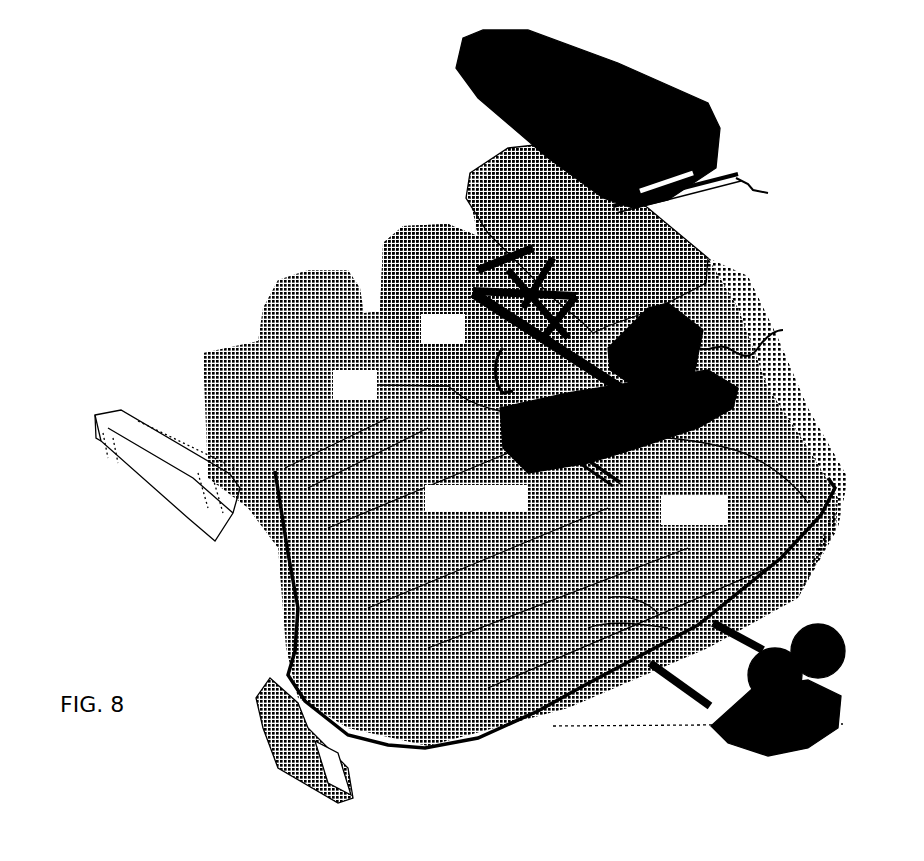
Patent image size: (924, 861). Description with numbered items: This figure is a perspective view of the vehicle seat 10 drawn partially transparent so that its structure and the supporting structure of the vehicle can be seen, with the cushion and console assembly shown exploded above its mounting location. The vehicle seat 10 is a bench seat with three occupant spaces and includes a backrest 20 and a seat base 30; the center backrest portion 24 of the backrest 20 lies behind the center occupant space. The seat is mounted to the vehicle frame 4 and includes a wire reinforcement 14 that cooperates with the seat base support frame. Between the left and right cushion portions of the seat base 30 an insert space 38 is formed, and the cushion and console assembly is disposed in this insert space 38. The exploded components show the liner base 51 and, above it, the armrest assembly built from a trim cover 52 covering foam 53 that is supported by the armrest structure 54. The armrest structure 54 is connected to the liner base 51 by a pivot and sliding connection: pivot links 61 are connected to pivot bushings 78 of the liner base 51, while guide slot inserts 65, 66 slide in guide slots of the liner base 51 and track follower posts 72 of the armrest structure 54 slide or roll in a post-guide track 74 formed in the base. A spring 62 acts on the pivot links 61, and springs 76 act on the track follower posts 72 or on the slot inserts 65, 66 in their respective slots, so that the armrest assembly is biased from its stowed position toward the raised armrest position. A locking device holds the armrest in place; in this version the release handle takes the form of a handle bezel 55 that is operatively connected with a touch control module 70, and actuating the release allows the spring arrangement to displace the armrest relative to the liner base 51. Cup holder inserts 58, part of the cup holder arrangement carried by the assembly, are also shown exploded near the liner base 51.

The vehicle frame 4 is at (225, 535).
The vehicle seat 10 is at (305, 210).
The wire reinforcement 14 is at (575, 720).
The backrest 20 is at (190, 372).
The center backrest portion 24 is at (468, 305).
The seat base 30 is at (790, 457).
The insert space 38 is at (603, 607).
The liner base 51 is at (740, 745).
The trim cover 52 is at (695, 125).
The foam 53 is at (700, 258).
The armrest structure 54 is at (695, 340).
The handle bezel 55 is at (768, 195).
The cup holder inserts 58 is at (825, 625).
The pivot links 61 is at (490, 372).
The spring 62 is at (560, 457).
The guide slot insert 65 is at (745, 610).
The guide slot insert 66 is at (710, 630).
The touch control module 70 is at (708, 163).
The track follower posts 72 is at (754, 338).
The post-guide track 74 is at (725, 388).
The springs 76 is at (600, 455).
The pivot bushings 78 is at (420, 391).